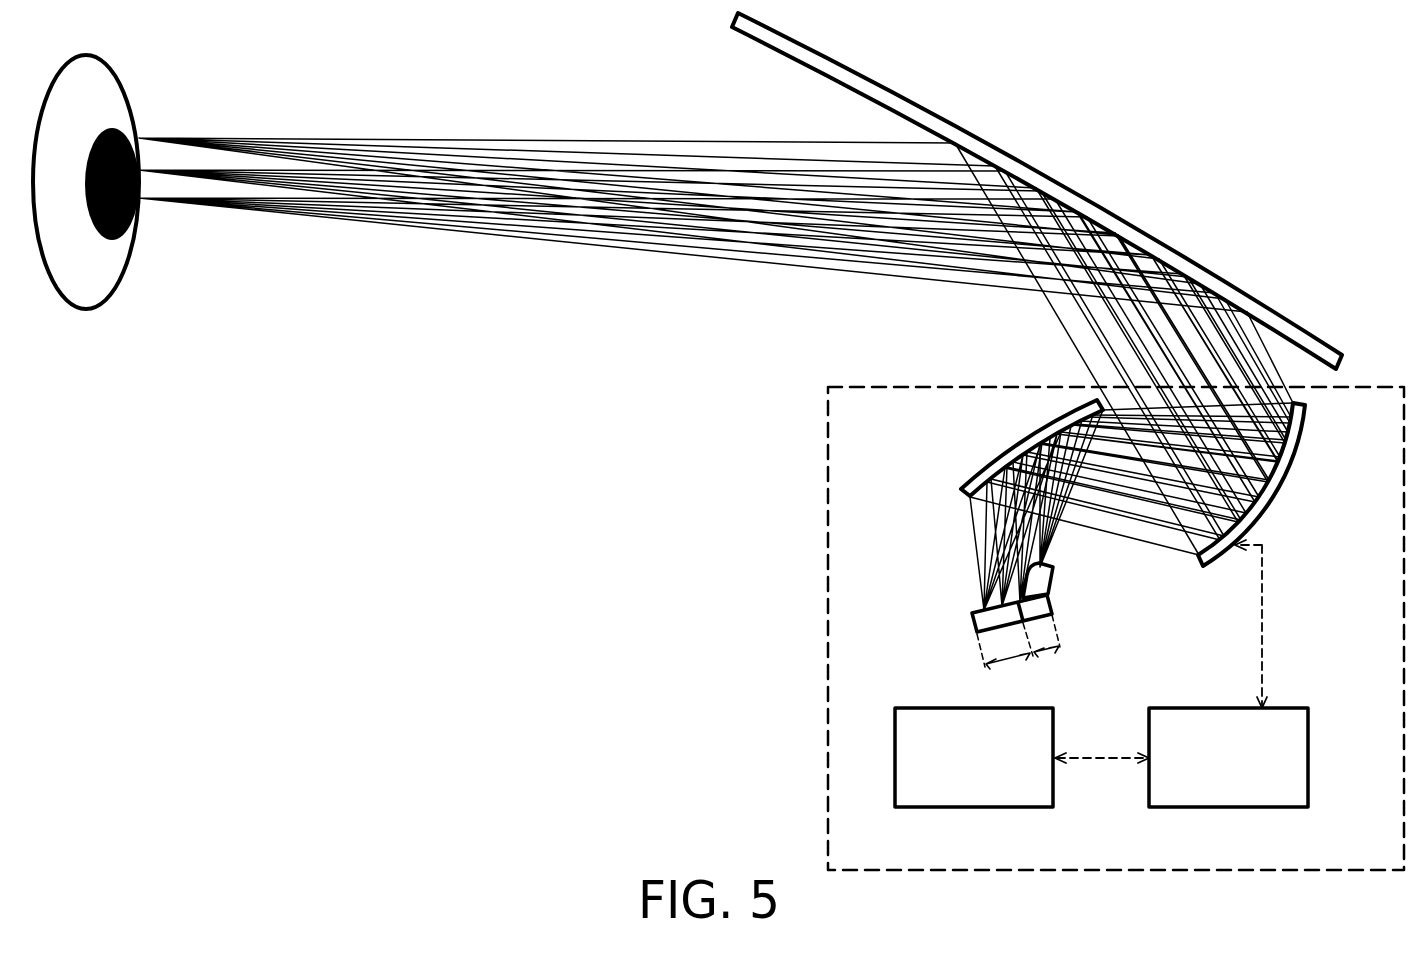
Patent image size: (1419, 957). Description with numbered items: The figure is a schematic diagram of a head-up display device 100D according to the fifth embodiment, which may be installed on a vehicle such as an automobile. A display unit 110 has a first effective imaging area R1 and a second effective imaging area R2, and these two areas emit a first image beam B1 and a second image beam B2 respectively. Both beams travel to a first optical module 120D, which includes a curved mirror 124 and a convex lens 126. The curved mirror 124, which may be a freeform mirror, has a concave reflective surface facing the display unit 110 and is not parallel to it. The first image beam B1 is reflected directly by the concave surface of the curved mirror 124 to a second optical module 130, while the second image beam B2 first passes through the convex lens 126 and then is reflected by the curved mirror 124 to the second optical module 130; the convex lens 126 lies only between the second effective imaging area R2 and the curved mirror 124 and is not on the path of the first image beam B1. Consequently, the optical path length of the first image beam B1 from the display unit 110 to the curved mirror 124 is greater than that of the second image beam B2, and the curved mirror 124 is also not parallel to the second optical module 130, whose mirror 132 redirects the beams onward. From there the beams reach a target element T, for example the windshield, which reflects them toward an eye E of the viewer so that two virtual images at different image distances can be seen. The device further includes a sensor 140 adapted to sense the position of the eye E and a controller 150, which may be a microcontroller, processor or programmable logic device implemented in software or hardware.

The eye E is at (117, 95).
The target element T is at (911, 108).
The head-up display device 100D is at (825, 610).
The first optical module 120D is at (938, 519).
The curved mirror 124 is at (1025, 447).
The convex lens 126 is at (1057, 578).
The second optical module 130 is at (1294, 484).
The second curved mirror 132 is at (1278, 477).
The display unit 110 is at (975, 622).
The first image beam B1 is at (982, 553).
The second image beam B2 is at (1065, 530).
The first effective imaging area R1 is at (1005, 661).
The second effective imaging area R2 is at (1051, 654).
The sensor 140 is at (972, 808).
The controller 150 is at (1228, 808).